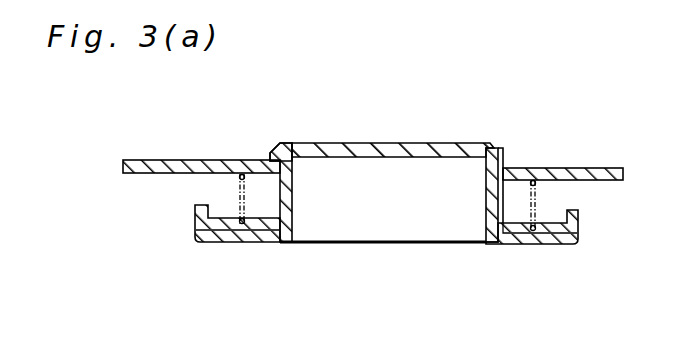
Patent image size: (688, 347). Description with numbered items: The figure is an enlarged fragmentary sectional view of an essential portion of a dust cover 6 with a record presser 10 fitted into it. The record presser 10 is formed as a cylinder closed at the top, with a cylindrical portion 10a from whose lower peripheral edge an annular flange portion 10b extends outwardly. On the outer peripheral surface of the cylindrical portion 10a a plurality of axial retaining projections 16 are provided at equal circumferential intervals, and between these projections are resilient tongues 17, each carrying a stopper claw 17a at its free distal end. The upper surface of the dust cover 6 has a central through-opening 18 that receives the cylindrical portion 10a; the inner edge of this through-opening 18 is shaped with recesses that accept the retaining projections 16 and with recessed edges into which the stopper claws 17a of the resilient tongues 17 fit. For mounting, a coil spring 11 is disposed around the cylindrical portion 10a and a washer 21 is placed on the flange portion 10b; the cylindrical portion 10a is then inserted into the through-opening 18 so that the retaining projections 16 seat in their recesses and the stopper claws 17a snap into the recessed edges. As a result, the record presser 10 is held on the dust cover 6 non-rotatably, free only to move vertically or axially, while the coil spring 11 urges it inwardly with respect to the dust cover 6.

The dust cover 6 is at (163, 160).
The record presser 10 is at (342, 250).
The cylindrical portion 10a is at (403, 143).
The annular flange portion 10b is at (195, 223).
The coil spring 11 is at (240, 187).
The retaining projections 16 is at (503, 148).
The resilient tongues 17 is at (285, 197).
The stopper claw 17a is at (280, 141).
The through-opening 18 is at (515, 168).
The washer 21 is at (511, 246).